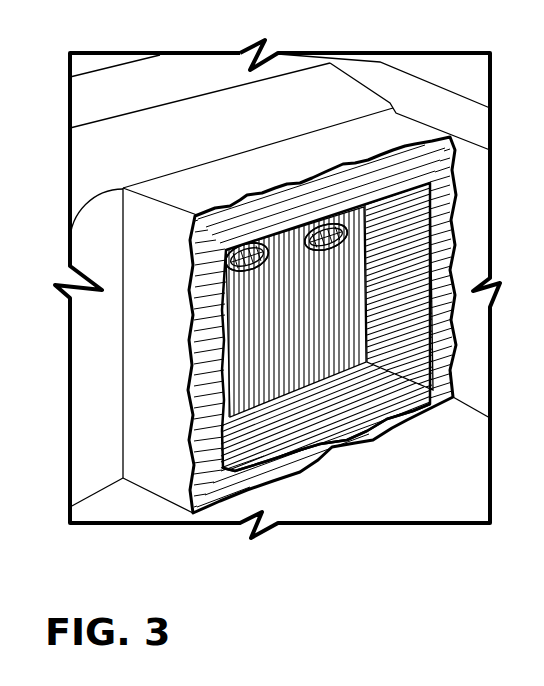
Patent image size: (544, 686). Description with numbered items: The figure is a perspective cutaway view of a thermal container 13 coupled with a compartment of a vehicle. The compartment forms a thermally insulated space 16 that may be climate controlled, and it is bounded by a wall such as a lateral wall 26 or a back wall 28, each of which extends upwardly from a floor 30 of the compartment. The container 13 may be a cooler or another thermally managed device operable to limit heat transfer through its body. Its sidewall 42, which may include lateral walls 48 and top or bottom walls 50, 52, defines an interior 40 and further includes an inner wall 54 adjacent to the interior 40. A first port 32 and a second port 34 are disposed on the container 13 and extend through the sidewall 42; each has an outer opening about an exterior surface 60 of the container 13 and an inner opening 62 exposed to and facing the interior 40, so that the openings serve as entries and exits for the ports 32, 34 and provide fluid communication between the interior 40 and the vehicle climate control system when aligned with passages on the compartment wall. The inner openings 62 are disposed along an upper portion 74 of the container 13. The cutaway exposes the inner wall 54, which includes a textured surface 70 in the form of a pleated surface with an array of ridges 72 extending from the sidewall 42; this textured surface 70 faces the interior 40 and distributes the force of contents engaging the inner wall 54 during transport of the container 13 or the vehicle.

The thermal container 13 is at (412, 112).
The thermally insulated space 16 is at (339, 325).
The lateral wall 26 is at (104, 216).
The back wall 28 is at (474, 170).
The floor 30 is at (378, 498).
The first port 32 is at (240, 280).
The second port 34 is at (315, 258).
The interior 40 is at (296, 312).
The sidewall 42 is at (123, 333).
The lateral walls 48 is at (150, 267).
The top wall 50 is at (175, 180).
The bottom wall 52 is at (227, 487).
The inner wall 54 is at (437, 214).
The exterior surface 60 is at (160, 455).
The inner opening 62 is at (240, 242).
The textured surface 70 is at (390, 413).
The ridges 72 is at (372, 408).
The upper portion 74 is at (152, 221).